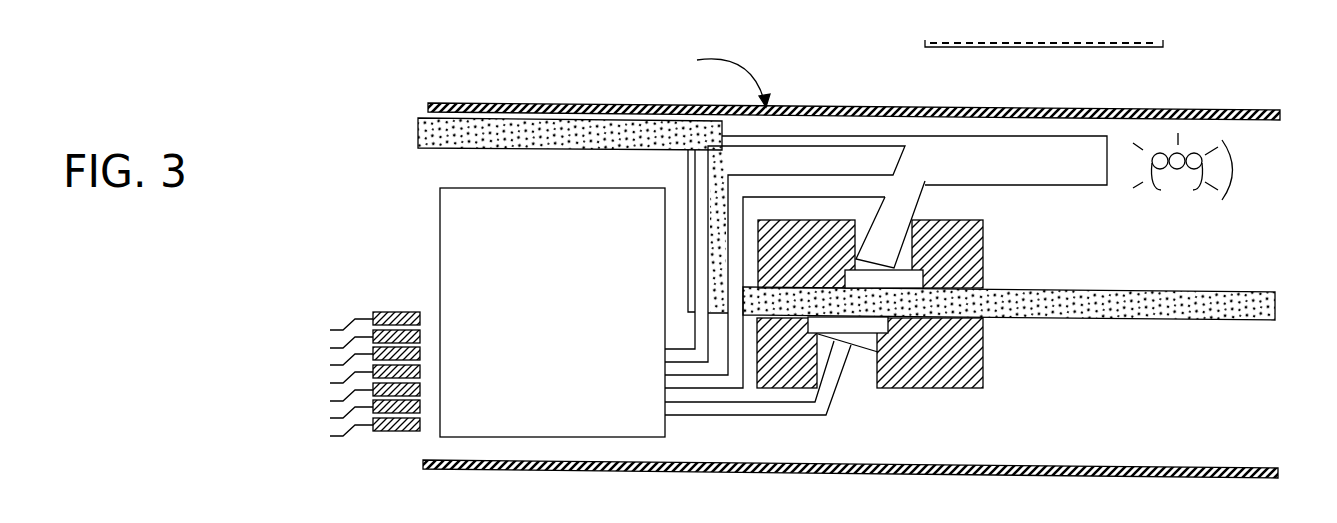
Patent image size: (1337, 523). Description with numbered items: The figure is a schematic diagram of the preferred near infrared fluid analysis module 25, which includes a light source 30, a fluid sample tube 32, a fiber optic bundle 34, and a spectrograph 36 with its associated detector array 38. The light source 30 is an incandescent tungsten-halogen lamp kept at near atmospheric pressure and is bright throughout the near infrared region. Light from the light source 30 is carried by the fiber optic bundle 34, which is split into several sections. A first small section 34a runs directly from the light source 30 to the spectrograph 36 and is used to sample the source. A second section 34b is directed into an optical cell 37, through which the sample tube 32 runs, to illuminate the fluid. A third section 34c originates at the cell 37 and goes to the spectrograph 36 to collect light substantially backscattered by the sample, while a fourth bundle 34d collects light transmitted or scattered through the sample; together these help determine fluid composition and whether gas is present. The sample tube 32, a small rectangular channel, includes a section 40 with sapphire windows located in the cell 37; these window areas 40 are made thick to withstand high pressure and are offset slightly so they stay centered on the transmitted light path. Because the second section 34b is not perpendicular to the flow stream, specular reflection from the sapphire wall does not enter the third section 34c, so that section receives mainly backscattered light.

The fluid analysis module 25 is at (1100, 97).
The light source 30 is at (1203, 164).
The fluid sample tube 32 is at (1180, 364).
The fiber optic bundle 34 is at (998, 150).
The first section 34a is at (807, 142).
The second section 34b is at (905, 200).
The third section 34c is at (848, 183).
The fourth bundle 34d is at (828, 414).
The spectrograph 36 is at (450, 223).
The optical cell 37 is at (983, 242).
The detector array 38 is at (373, 315).
The sapphire window section 40 is at (908, 281).